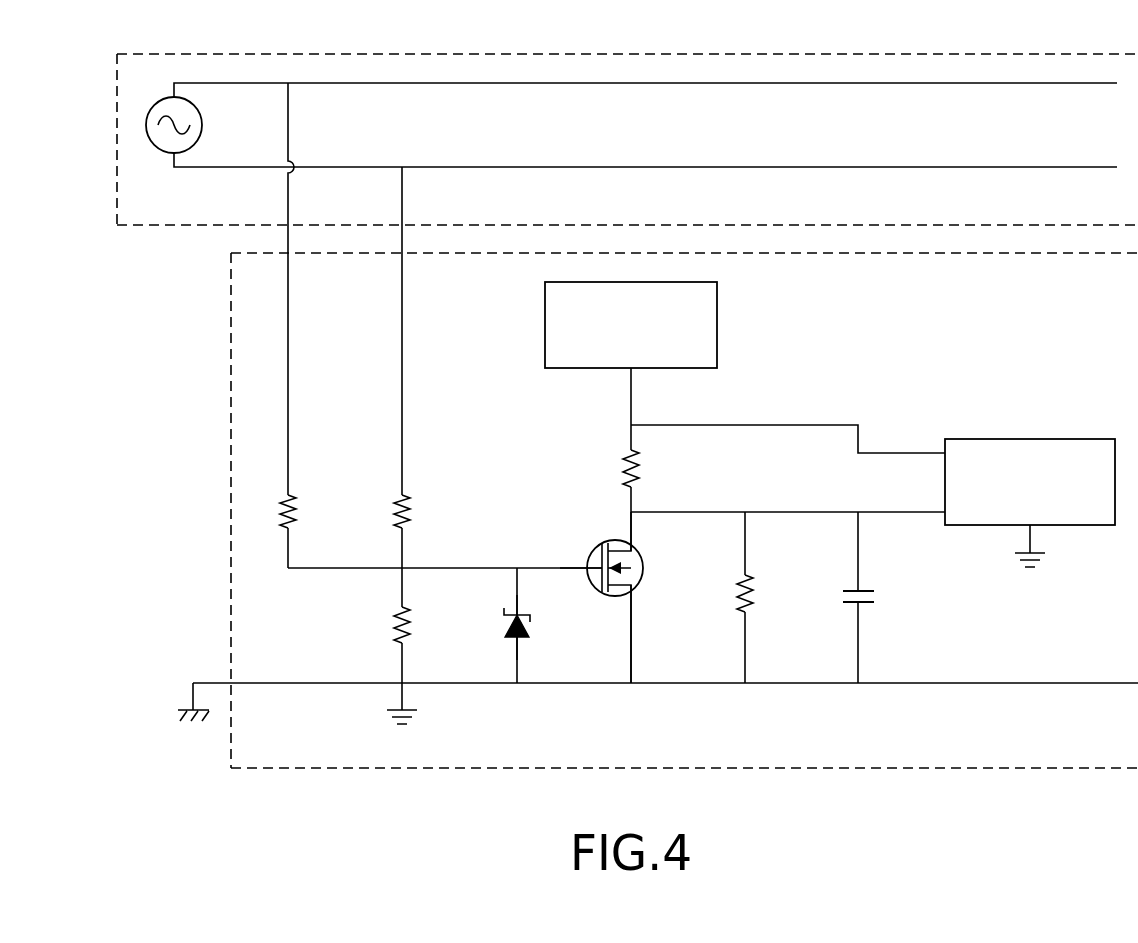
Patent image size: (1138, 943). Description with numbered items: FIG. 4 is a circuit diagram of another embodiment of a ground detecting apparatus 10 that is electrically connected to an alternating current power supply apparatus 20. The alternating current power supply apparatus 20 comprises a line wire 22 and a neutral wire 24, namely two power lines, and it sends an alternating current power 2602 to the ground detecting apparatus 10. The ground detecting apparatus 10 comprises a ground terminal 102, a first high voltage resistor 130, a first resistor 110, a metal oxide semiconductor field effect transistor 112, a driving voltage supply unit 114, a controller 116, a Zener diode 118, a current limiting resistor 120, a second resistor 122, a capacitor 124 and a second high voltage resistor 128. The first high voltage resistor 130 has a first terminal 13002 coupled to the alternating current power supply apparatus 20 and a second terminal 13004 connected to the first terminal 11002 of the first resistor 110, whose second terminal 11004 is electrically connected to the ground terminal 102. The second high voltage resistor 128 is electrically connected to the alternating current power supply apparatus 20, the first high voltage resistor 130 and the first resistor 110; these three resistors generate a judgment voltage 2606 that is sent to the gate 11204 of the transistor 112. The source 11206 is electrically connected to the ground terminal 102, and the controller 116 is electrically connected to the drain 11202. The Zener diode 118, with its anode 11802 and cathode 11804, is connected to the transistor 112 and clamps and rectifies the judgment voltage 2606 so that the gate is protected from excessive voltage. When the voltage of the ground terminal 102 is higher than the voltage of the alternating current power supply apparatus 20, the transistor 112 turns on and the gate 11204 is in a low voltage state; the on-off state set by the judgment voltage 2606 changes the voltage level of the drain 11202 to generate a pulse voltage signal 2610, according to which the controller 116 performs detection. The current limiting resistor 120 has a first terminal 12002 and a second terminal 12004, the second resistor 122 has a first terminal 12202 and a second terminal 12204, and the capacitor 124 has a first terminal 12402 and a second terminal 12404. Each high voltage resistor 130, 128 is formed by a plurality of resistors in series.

The ground detecting apparatus 10 is at (862, 770).
The alternating current power supply apparatus 20 is at (631, 58).
The line wire 22 is at (187, 83).
The neutral wire 24 is at (187, 167).
The alternating current power 2602 is at (288, 193).
The judgment voltage 2606 is at (440, 568).
The pulse voltage signal 2610 is at (687, 510).
The ground terminal 102 is at (395, 720).
The first resistor 110 is at (398, 620).
The first terminal 11002 is at (400, 603).
The second terminal 11004 is at (400, 648).
The metal oxide semiconductor field effect transistor 112 is at (641, 568).
The drain 11202 is at (635, 542).
The gate 11204 is at (585, 568).
The source 11206 is at (632, 600).
The driving voltage supply unit 114 is at (717, 318).
The controller 116 is at (1030, 445).
The Zener diode 118 is at (505, 622).
The anode 11802 is at (515, 655).
The cathode 11804 is at (515, 600).
The current limiting resistor 120 is at (625, 468).
The first terminal 12002 is at (630, 447).
The second terminal 12004 is at (630, 490).
The second resistor 122 is at (752, 598).
The first terminal 12202 is at (745, 572).
The second terminal 12204 is at (748, 620).
The capacitor 124 is at (872, 597).
The first terminal 12402 is at (862, 573).
The second terminal 12404 is at (862, 620).
The second high voltage resistor 128 is at (285, 505).
The first high voltage resistor 130 is at (398, 512).
The first terminal 13002 is at (400, 490).
The second terminal 13004 is at (400, 535).